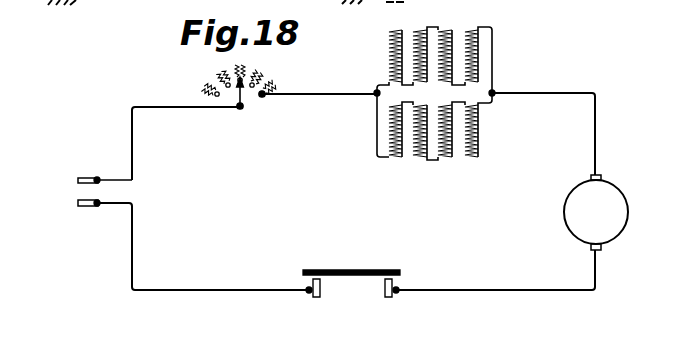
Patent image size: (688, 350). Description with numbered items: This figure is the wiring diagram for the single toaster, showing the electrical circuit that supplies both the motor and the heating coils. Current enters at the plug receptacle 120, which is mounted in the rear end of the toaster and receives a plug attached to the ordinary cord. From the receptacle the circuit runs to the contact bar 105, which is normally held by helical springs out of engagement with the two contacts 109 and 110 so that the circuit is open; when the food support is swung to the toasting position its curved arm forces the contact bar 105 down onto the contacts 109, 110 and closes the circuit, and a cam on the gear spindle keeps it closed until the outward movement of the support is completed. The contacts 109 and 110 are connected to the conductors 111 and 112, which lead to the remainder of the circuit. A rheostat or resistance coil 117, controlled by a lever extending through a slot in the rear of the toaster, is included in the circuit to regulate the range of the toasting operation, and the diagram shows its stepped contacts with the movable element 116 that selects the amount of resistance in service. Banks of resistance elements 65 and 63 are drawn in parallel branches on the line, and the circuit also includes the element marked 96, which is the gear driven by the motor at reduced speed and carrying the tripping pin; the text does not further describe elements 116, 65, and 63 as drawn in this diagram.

The plug receptacle 120 is at (74, 182).
The switch arm 116 is at (246, 109).
The rheostat or resistance coil 117 is at (268, 79).
The resistance coils 65 is at (478, 62).
The resistance coils 63 is at (478, 140).
The gear 96 is at (596, 212).
The conductor 111 is at (238, 276).
The conductor 112 is at (503, 279).
The contact bar 105 is at (372, 263).
The contact 109 is at (323, 288).
The contact 110 is at (383, 288).